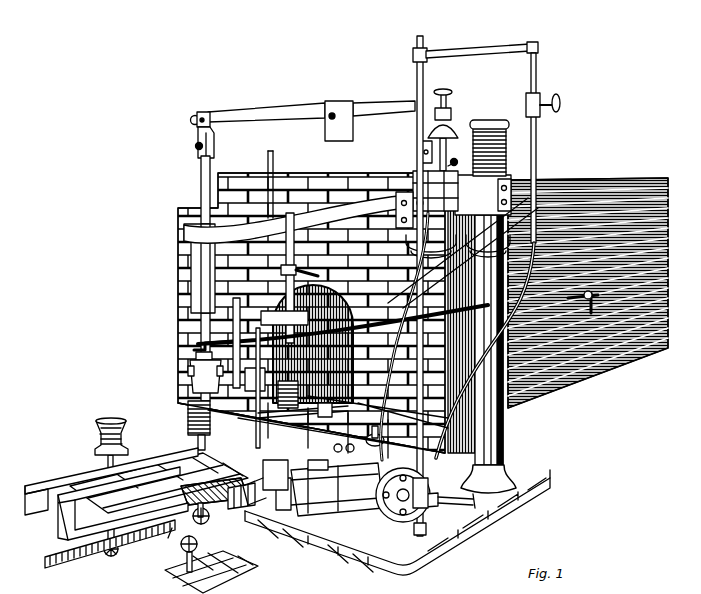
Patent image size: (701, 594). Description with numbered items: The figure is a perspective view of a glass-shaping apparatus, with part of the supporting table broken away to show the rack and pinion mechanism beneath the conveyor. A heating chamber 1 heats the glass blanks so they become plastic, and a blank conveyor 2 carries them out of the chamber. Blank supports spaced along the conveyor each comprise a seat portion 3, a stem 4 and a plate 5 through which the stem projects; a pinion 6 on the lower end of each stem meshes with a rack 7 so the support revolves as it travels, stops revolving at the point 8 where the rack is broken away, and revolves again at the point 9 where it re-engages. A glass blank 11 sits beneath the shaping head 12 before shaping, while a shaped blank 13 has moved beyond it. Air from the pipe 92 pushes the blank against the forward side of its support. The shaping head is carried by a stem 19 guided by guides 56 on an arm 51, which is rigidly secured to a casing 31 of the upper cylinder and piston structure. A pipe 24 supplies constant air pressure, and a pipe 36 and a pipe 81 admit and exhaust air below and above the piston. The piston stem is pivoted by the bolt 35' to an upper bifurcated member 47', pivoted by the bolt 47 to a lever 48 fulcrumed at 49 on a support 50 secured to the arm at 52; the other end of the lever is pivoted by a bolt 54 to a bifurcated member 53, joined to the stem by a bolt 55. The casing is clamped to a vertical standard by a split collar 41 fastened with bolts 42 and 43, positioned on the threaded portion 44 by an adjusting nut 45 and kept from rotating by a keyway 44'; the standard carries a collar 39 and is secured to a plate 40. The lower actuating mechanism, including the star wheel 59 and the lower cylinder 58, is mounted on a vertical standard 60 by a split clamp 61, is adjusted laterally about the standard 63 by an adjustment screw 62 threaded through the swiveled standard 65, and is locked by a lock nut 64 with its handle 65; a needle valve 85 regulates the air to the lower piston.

The heating chamber 1 is at (284, 178).
The blank conveyor 2 is at (53, 476).
The seat portion 3 is at (105, 440).
The stem 4 is at (96, 462).
The plate 5 is at (105, 470).
The pinion 6 is at (105, 548).
The rack 7 is at (72, 556).
The point where rack is broken away 8 is at (228, 500).
The point where pinion re-meshes with rack 9 is at (163, 520).
The glass blank 11 is at (180, 400).
The shaping head 12 is at (190, 365).
The shaped blank 13 is at (110, 416).
The stem 19 is at (193, 182).
The pipe 24 is at (355, 325).
The casing 31 is at (408, 172).
The bolt 35' is at (414, 148).
The pipe 36 is at (507, 394).
The collar 39 is at (490, 470).
The plate 40 is at (480, 508).
The split collar 41 is at (540, 186).
The bolt 42 is at (528, 160).
The bolt 43 is at (520, 180).
The threaded upper portion 44 is at (503, 148).
The keyway 44' is at (474, 154).
The adjusting nut 45 is at (498, 177).
The bolt 47 is at (413, 286).
The upper bifurcated member 47' is at (443, 105).
The lever 48 is at (368, 100).
The fulcrum 49 is at (330, 93).
The support 50 is at (378, 188).
The arm 51 is at (300, 215).
The securing point 52 is at (355, 195).
The bifurcated member 53 is at (190, 124).
The bolt 54 is at (183, 112).
The bolt 55 is at (187, 139).
The guides 56 is at (190, 275).
The lower cylinder 58 is at (400, 512).
The star wheel 59 is at (205, 478).
The vertical standard 60 is at (372, 425).
The split clamp 61 is at (425, 452).
The adjustment screw 62 is at (332, 436).
The vertical standard 63 is at (325, 400).
The lock nut 64 is at (350, 440).
The handle 65 is at (315, 482).
The pipe 81 is at (470, 408).
The needle valve 85 is at (195, 340).
The pipe 92 is at (236, 372).